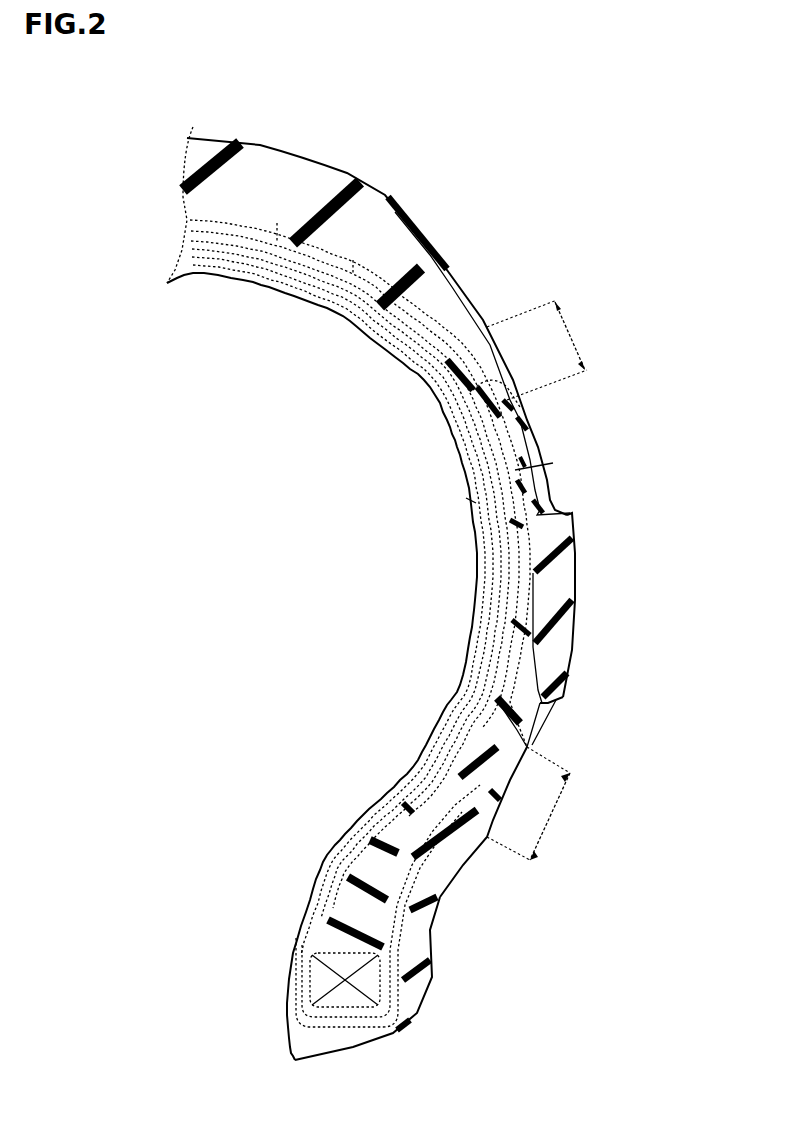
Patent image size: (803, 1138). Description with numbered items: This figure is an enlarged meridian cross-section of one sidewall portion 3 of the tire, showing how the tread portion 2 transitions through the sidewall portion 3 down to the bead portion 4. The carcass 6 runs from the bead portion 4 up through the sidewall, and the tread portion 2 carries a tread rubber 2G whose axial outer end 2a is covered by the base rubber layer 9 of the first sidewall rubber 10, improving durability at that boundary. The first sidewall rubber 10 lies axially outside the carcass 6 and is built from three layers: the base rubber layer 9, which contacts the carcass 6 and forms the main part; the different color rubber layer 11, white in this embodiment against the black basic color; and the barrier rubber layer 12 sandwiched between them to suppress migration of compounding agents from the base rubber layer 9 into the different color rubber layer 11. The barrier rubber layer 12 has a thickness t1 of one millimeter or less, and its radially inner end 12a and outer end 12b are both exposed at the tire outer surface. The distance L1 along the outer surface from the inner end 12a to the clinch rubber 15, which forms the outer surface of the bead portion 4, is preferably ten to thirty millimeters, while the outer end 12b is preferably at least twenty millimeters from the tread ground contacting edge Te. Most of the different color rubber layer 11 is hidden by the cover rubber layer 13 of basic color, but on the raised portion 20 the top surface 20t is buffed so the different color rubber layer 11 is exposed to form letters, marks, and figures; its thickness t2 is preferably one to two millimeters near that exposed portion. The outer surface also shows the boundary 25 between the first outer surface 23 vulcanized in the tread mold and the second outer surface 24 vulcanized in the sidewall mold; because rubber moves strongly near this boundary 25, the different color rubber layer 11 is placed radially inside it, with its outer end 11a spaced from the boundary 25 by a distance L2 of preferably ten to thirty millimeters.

The tread portion 2 is at (212, 137).
The tread ground contacting edge Te is at (297, 157).
The tread rubber 2G is at (243, 200).
The sidewall portion 3 is at (598, 458).
The bead portion 4 is at (443, 953).
The carcass 6 is at (327, 287).
The base rubber layer 9 is at (517, 560).
The first sidewall rubber 10 is at (470, 440).
The different color rubber layer 11 is at (543, 602).
The outer end of the different color rubber layer 11a is at (455, 410).
The barrier rubber layer 12 is at (513, 668).
The inner end of the barrier rubber layer 12a is at (527, 747).
The outer end of the barrier rubber layer 12b is at (503, 400).
The cover rubber layer 13 is at (543, 713).
The clinch rubber 15 is at (432, 866).
The raised portion 20 is at (573, 607).
The top surface of the raised portion 20t is at (575, 550).
The first outer surface 23 is at (447, 270).
The second outer surface 24 is at (547, 485).
The boundary 25 is at (487, 327).
The outer end of the tread rubber 2a is at (450, 371).
The thickness of the barrier rubber layer t1 is at (470, 500).
The thickness of the different color rubber layer t2 is at (500, 470).
The distance L1 is at (533, 803).
The distance L2 is at (542, 350).